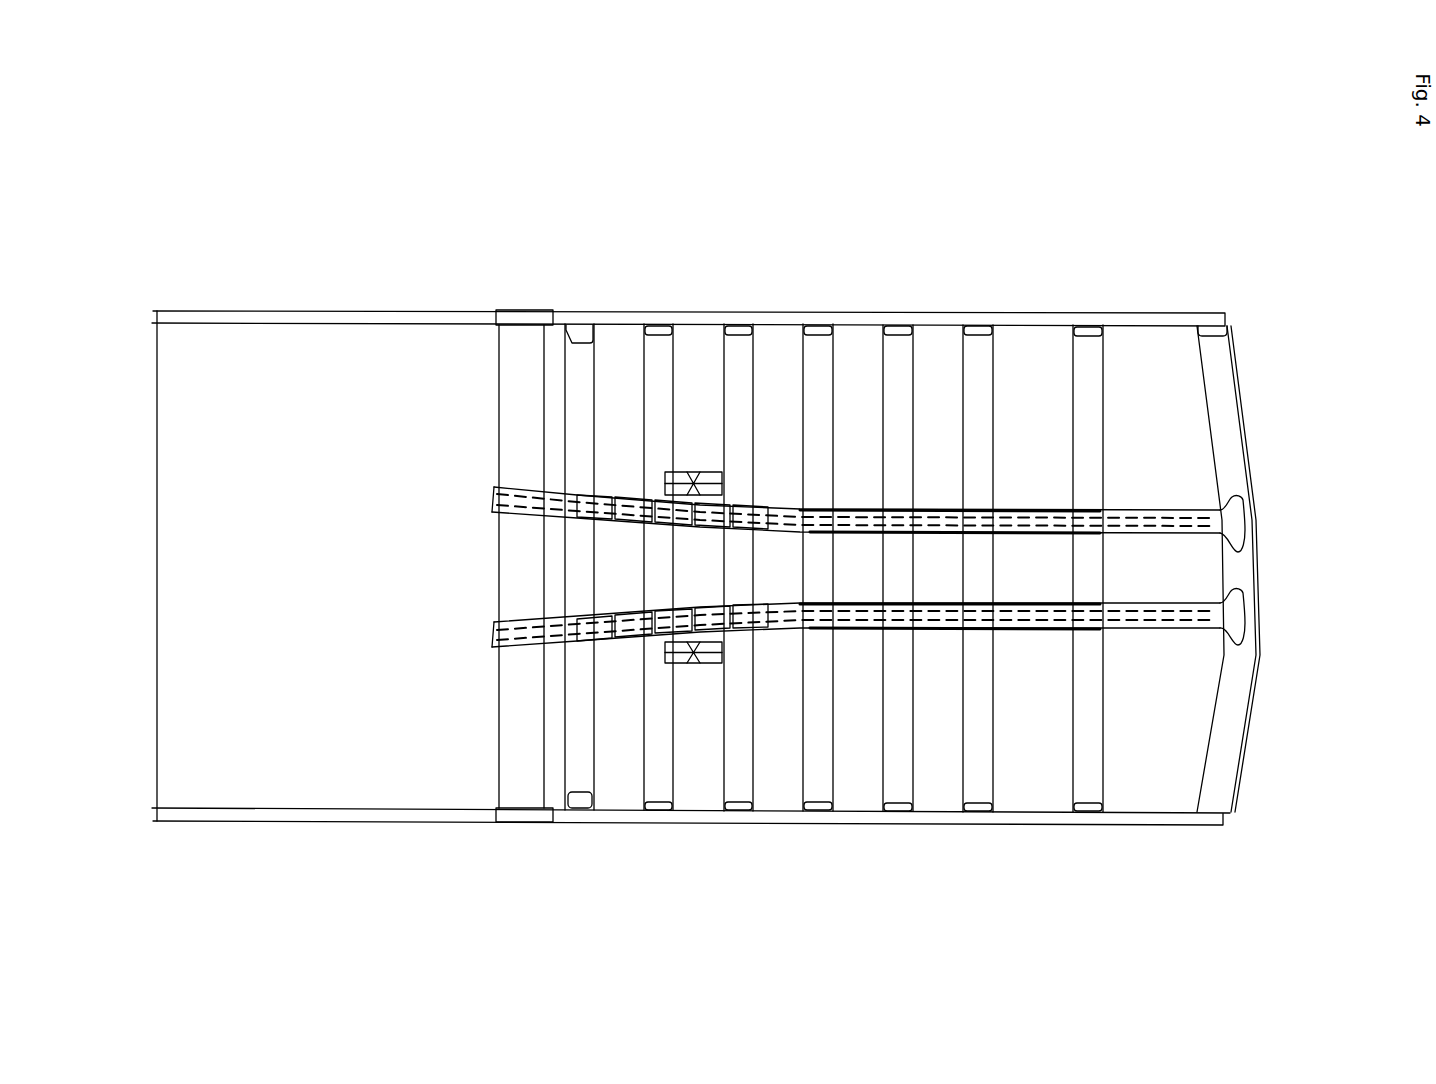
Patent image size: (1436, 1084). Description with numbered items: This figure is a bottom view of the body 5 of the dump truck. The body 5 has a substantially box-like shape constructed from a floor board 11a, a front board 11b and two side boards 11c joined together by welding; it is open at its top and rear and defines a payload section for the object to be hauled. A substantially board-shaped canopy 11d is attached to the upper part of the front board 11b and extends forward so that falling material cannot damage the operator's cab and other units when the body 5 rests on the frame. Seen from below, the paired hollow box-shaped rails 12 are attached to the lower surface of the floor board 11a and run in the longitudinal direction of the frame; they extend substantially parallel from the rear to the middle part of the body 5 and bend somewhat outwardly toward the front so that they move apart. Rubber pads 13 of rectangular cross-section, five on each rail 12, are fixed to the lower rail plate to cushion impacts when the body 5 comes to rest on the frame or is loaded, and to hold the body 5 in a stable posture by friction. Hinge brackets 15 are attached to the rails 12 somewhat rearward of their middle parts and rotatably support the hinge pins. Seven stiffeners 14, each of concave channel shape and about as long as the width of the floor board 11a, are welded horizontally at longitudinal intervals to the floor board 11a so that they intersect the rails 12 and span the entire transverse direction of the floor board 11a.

The body 5 is at (296, 294).
The floor board 11a is at (1157, 387).
The front board 11b is at (520, 753).
The side boards 11c is at (1030, 327).
The canopy 11d is at (253, 788).
The rails 12 is at (1178, 603).
The rubber pads 13 is at (750, 507).
The stiffeners 14 is at (576, 775).
The hinge brackets 15 is at (1033, 533).